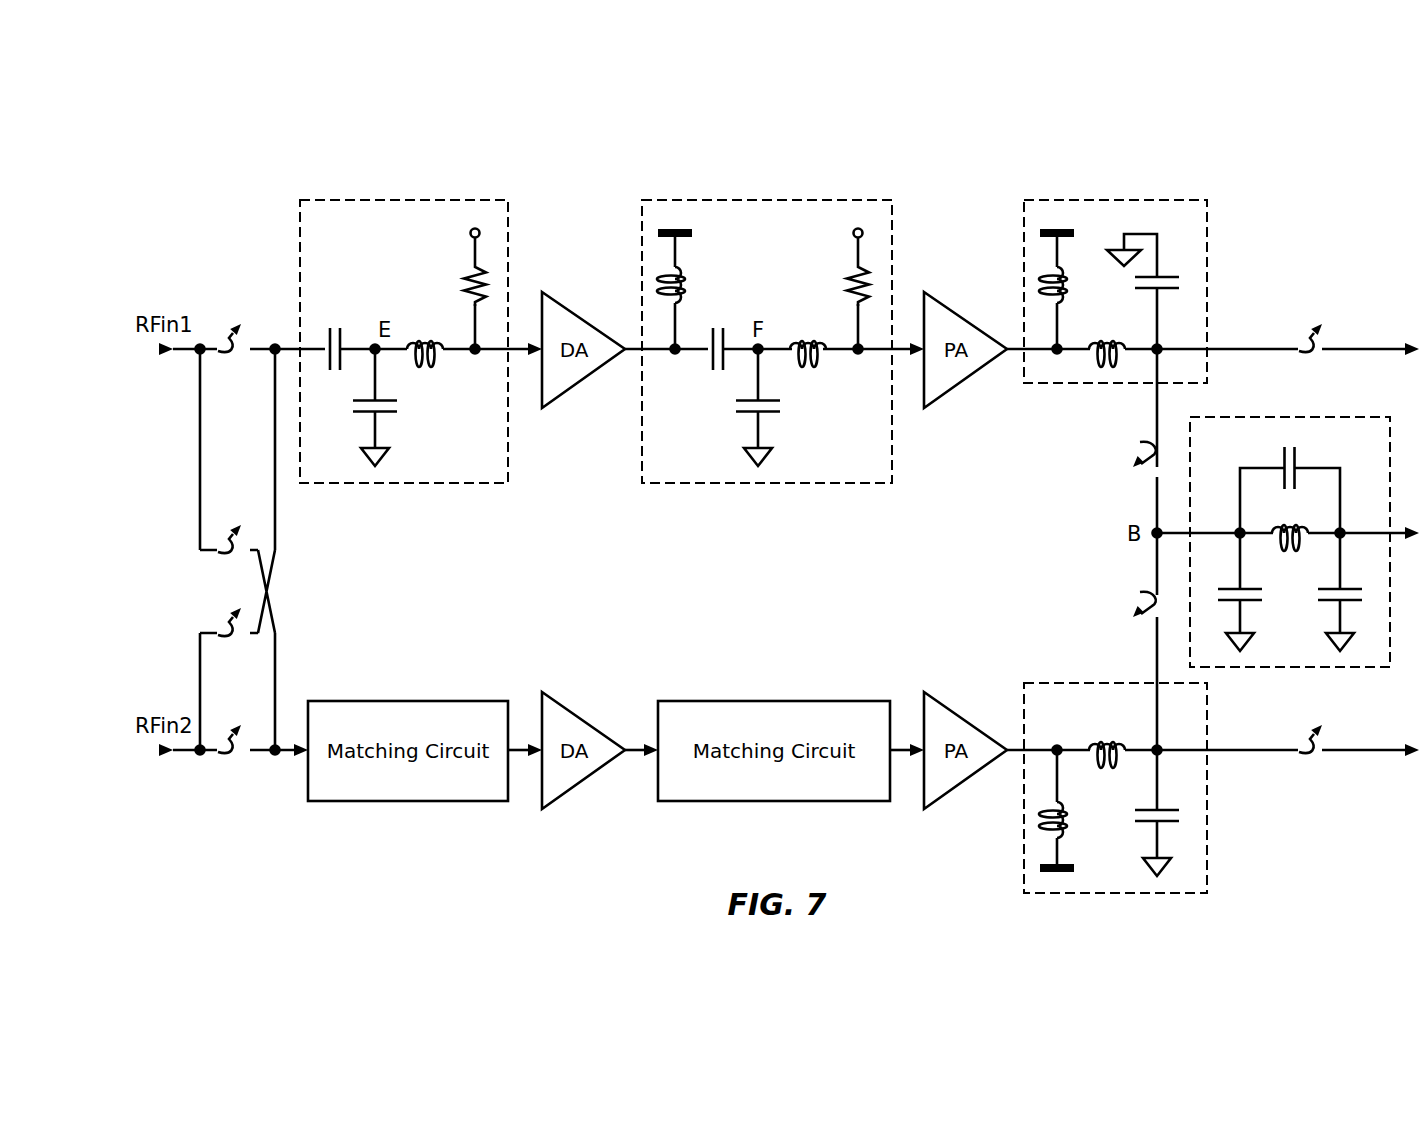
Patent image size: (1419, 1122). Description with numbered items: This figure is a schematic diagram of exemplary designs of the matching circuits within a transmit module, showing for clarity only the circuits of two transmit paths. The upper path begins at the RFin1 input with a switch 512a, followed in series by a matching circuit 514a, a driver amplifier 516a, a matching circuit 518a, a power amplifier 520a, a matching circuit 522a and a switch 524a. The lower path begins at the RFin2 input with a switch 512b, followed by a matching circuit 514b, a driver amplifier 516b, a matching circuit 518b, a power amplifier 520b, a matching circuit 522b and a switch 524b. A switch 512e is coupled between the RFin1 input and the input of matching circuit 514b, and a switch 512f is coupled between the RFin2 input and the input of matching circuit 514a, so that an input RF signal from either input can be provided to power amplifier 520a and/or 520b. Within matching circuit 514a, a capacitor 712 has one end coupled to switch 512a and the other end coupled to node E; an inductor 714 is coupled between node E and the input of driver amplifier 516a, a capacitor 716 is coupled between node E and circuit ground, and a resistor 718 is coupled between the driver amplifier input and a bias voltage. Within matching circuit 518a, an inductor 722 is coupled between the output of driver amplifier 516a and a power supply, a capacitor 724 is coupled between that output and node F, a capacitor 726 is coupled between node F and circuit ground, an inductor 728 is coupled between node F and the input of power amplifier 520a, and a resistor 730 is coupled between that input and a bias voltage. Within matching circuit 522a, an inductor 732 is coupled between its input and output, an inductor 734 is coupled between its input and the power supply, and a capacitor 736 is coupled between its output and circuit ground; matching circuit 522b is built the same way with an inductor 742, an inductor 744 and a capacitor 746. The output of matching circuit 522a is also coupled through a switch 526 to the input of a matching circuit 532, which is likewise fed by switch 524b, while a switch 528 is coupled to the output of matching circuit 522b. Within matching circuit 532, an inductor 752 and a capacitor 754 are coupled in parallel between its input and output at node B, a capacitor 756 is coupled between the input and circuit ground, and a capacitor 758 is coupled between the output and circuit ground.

The switch 512a is at (240, 355).
The switch 512b is at (239, 756).
The switch 512e is at (234, 555).
The switch 512f is at (234, 638).
The matching circuit 514a is at (401, 200).
The matching circuit 514b is at (402, 701).
The driver amplifier 516a is at (577, 318).
The driver amplifier 516b is at (575, 719).
The matching circuit 518a is at (759, 200).
The matching circuit 518b is at (769, 701).
The power amplifier 520a is at (960, 318).
The power amplifier 520b is at (957, 719).
The matching circuit 522a is at (1108, 200).
The matching circuit 522b is at (1094, 683).
The switch 524a is at (1313, 355).
The switch 524b is at (1123, 595).
The switch 526 is at (1128, 447).
The switch 528 is at (1313, 756).
The matching circuit 532 is at (1356, 416).
The capacitor 712 is at (344, 338).
The inductor 714 is at (417, 335).
The capacitor 716 is at (392, 404).
The resistor 718 is at (465, 275).
The inductor 722 is at (688, 280).
The capacitor 724 is at (713, 368).
The capacitor 726 is at (775, 404).
The inductor 728 is at (805, 334).
The resistor 730 is at (852, 276).
The inductor 732 is at (1110, 338).
The inductor 734 is at (1075, 298).
The capacitor 736 is at (1168, 277).
The inductor 742 is at (1105, 736).
The inductor 744 is at (1071, 816).
The capacitor 746 is at (1168, 811).
The inductor 752 is at (1296, 524).
The capacitor 754 is at (1297, 456).
The capacitor 756 is at (1225, 589).
The capacitor 758 is at (1352, 589).